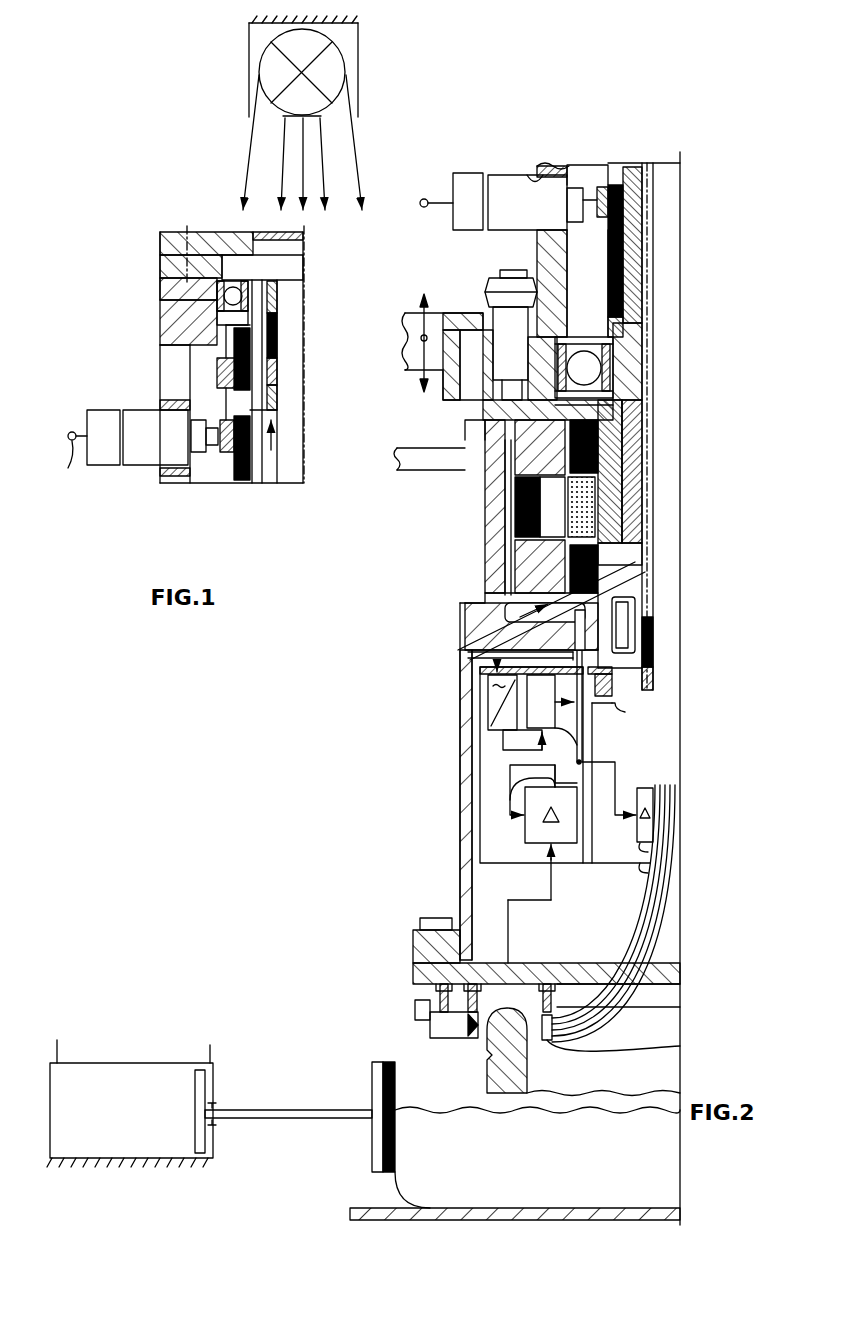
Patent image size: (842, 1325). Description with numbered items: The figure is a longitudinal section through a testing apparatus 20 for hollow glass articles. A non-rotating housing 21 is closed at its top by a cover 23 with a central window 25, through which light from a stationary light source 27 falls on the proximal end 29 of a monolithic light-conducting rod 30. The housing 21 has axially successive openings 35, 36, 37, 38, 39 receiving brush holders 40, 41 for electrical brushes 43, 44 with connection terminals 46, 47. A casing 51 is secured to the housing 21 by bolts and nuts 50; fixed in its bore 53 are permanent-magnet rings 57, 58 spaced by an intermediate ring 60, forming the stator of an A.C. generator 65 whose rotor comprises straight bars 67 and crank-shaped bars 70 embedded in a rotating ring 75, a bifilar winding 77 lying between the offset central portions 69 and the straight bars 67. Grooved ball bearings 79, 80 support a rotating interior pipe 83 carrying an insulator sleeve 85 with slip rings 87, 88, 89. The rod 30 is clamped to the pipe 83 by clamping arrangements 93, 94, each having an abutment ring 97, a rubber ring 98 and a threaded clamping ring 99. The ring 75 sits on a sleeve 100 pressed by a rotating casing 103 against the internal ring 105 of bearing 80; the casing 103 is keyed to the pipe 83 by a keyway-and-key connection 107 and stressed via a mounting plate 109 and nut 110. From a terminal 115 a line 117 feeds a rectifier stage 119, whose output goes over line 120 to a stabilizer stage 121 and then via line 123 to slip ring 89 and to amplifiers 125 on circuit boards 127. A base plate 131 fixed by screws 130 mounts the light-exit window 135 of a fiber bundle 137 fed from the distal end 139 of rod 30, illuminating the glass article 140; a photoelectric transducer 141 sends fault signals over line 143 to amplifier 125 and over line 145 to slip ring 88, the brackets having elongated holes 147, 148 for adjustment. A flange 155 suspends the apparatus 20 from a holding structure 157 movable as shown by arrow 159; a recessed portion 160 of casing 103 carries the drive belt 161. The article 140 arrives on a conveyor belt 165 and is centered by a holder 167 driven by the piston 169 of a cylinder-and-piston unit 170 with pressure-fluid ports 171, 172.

In FIG. 1, the testing apparatus 20 is at (137, 178).
In FIG. 2, the testing apparatus 20 is at (402, 752).
In FIG. 1, the non-rotating housing 21 is at (160, 315).
In FIG. 2, the non-rotating housing 21 is at (537, 240).
In FIG. 1, the cover 23 is at (160, 240).
In FIG. 1, the central window 25 is at (256, 232).
In FIG. 1, the stationary light source 27 is at (266, 60).
In FIG. 1, the proximal end 29 is at (303, 272).
In FIG. 1, the monolithic rod 30 is at (295, 336).
In FIG. 2, the monolithic rod 30 is at (672, 276).
In FIG. 1, the opening 35 is at (160, 350).
In FIG. 1, the opening 36 is at (158, 408).
In FIG. 1, the opening 37 is at (170, 477).
In FIG. 2, the opening 38 is at (548, 165).
In FIG. 2, the opening 39 is at (530, 175).
In FIG. 1, the brush holder 40 is at (125, 466).
In FIG. 2, the brush holder 41 is at (470, 173).
In FIG. 1, the electrical brush 43 is at (205, 452).
In FIG. 2, the electrical brush 44 is at (590, 195).
In FIG. 1, the connection terminal 46 is at (72, 465).
In FIG. 2, the connection terminal 47 is at (424, 198).
In FIG. 2, the bolts and nuts 50 is at (495, 278).
In FIG. 2, the casing 51 is at (500, 603).
In FIG. 2, the bore 53 is at (462, 615).
In FIG. 2, the permanent-magnet ring 57 is at (483, 440).
In FIG. 2, the permanent-magnet ring 58 is at (515, 565).
In FIG. 2, the intermediate ring 60 is at (580, 500).
In FIG. 2, the A.C. generator 65 is at (520, 630).
In FIG. 2, the straight bar 67 is at (520, 490).
In FIG. 2, the radially inwardly offset central portion 69 is at (632, 495).
In FIG. 2, the crank-shaped bar 70 is at (600, 445).
In FIG. 2, the rotating ring 75 is at (612, 425).
In FIG. 2, the bifilar winding 77 is at (560, 520).
In FIG. 1, the grooved ball bearing 79 is at (217, 296).
In FIG. 2, the grooved ball bearing 80 is at (600, 368).
In FIG. 1, the interior pipe 83 is at (257, 484).
In FIG. 2, the interior pipe 83 is at (635, 390).
In FIG. 1, the sleeve 85 is at (243, 484).
In FIG. 2, the sleeve 85 is at (625, 252).
In FIG. 1, the slip ring 87 is at (217, 372).
In FIG. 1, the slip ring 88 is at (226, 452).
In FIG. 2, the slip ring 89 is at (614, 195).
In FIG. 1, the clamping arrangement 93 is at (285, 320).
In FIG. 2, the clamping arrangement 94 is at (658, 643).
In FIG. 1, the abutment ring 97 is at (277, 388).
In FIG. 2, the abutment ring 97 is at (628, 610).
In FIG. 1, the rubber ring 98 is at (277, 365).
In FIG. 2, the rubber ring 98 is at (653, 635).
In FIG. 1, the threaded clamping ring 99 is at (277, 297).
In FIG. 2, the threaded clamping ring 99 is at (653, 680).
In FIG. 2, the sleeve 100 is at (632, 470).
In FIG. 2, the rotating casing 103 is at (460, 880).
In FIG. 2, the internal ring 105 is at (613, 345).
In FIG. 2, the keyway-and-key connection 107 is at (640, 580).
In FIG. 2, the mounting plate 109 is at (480, 675).
In FIG. 2, the nut 110 is at (625, 712).
In FIG. 2, the connection terminal 115 is at (468, 653).
In FIG. 2, the line 117 is at (480, 660).
In FIG. 2, the rectifier stage 119 is at (488, 698).
In FIG. 2, the line 120 is at (503, 740).
In FIG. 2, the D.C. voltage stabilizer stage 121 is at (583, 755).
In FIG. 2, the line 123 is at (632, 225).
In FIG. 2, the amplifier 125 is at (525, 825).
In FIG. 2, the circuit board 127 is at (510, 795).
In FIG. 2, the screws 130 is at (420, 922).
In FIG. 2, the base plate 131 is at (413, 975).
In FIG. 2, the light-exit window 135 is at (620, 1048).
In FIG. 2, the light-conductive fiber bundle 137 is at (660, 940).
In FIG. 2, the distal end 139 is at (653, 795).
In FIG. 2, the hollow glass article 140 is at (487, 1082).
In FIG. 2, the photoelectric transducer 141 is at (430, 1030).
In FIG. 2, the line 143 is at (415, 1012).
In FIG. 1, the line 145 is at (277, 484).
In FIG. 2, the line 145 is at (655, 185).
In FIG. 2, the elongated hole 147 is at (550, 975).
In FIG. 2, the elongated hole 148 is at (483, 975).
In FIG. 2, the flange 155 is at (480, 320).
In FIG. 2, the holding structure 157 is at (462, 365).
In FIG. 2, the double-headed arrow 159 is at (424, 296).
In FIG. 2, the recessed portion 160 is at (490, 545).
In FIG. 2, the drive belt 161 is at (400, 470).
In FIG. 2, the conveyor belt 165 is at (350, 1210).
In FIG. 2, the holder 167 is at (372, 1145).
In FIG. 2, the piston 169 is at (205, 1088).
In FIG. 2, the double-acting cylinder-and-piston unit 170 is at (115, 1063).
In FIG. 2, the pressure-fluid port 171 is at (57, 1045).
In FIG. 2, the pressure-fluid port 172 is at (210, 1048).